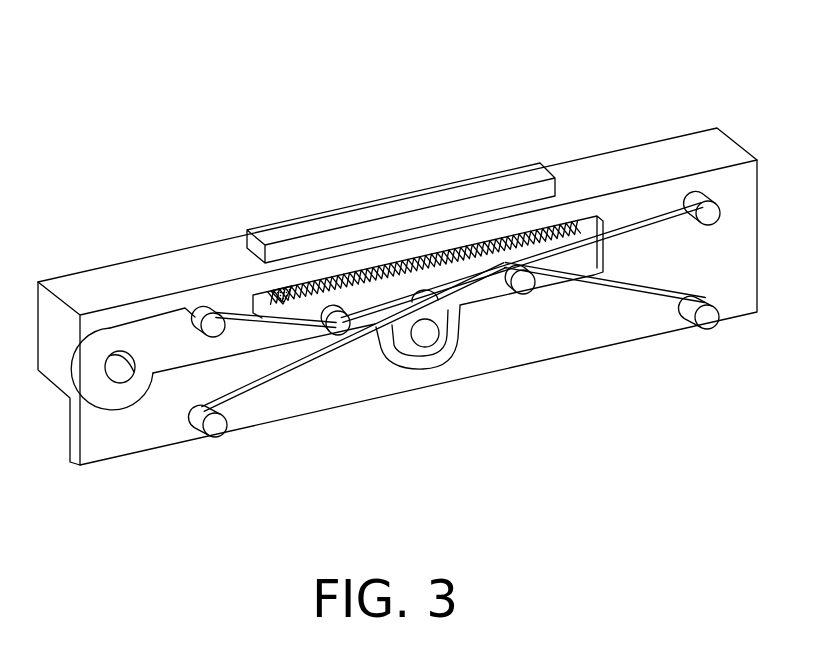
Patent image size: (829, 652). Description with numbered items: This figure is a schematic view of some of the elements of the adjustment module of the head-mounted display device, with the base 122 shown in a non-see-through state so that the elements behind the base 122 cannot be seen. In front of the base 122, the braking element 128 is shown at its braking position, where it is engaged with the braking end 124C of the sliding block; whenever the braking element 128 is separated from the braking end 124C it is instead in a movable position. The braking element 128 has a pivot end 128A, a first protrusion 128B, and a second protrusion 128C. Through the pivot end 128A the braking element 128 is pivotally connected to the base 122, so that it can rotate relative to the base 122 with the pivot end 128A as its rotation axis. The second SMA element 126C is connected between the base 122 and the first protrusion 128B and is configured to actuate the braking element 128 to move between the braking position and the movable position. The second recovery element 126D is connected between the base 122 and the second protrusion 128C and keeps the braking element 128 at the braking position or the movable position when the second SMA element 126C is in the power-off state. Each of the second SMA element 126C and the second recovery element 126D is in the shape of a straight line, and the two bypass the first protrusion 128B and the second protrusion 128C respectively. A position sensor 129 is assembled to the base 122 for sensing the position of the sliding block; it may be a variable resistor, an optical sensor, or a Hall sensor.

The base 122 is at (740, 142).
The position sensor 129 is at (377, 230).
The braking end 124C is at (280, 288).
The braking element 128 is at (152, 342).
The pivot end 128A is at (113, 390).
The first protrusion 128B is at (523, 283).
The second protrusion 128C is at (338, 327).
The second SMA element 126C is at (380, 333).
The second recovery element 126D is at (613, 228).